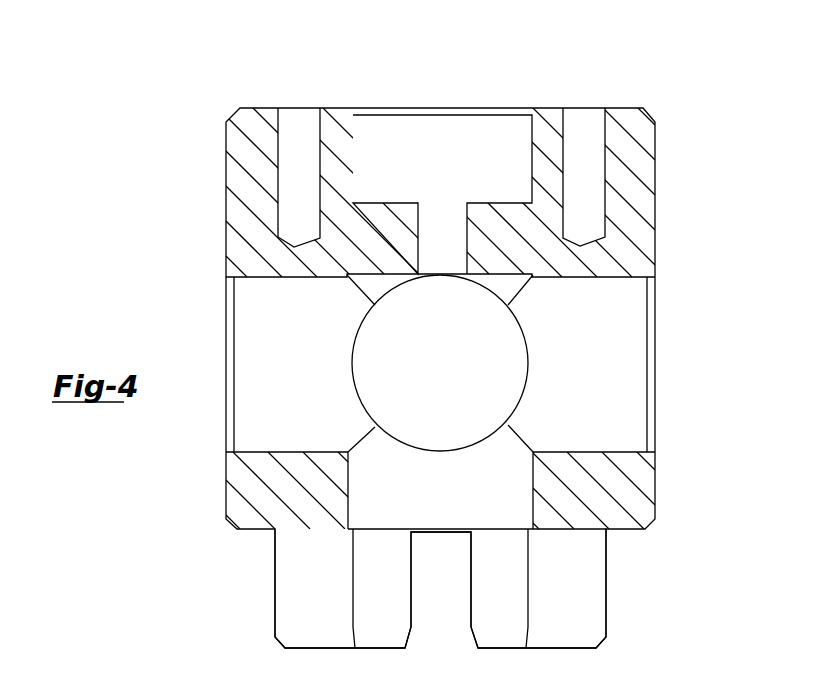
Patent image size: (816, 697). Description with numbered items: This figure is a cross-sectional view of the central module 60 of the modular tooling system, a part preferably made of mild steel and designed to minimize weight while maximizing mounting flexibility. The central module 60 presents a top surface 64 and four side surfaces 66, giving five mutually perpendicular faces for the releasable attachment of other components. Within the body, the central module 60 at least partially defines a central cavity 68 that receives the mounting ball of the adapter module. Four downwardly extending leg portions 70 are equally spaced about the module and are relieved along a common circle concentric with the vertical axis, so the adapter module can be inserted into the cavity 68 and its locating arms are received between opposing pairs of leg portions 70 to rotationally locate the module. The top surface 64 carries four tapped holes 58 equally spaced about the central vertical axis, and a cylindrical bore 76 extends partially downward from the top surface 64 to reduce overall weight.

The central module 60 is at (146, 196).
The side surfaces 66 is at (655, 222).
The top surface 64 is at (263, 112).
The tapped holes 58 is at (604, 125).
The cylindrical bore 76 is at (530, 137).
The central cavity 68 is at (458, 293).
The leg portions 70 is at (588, 588).